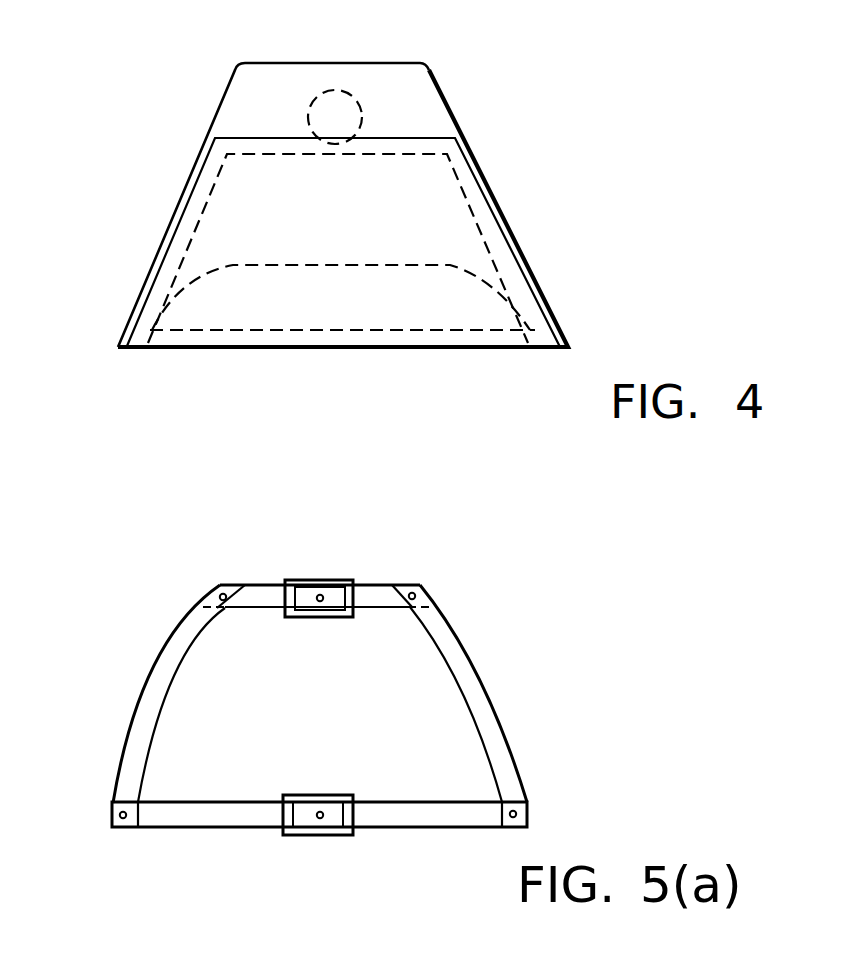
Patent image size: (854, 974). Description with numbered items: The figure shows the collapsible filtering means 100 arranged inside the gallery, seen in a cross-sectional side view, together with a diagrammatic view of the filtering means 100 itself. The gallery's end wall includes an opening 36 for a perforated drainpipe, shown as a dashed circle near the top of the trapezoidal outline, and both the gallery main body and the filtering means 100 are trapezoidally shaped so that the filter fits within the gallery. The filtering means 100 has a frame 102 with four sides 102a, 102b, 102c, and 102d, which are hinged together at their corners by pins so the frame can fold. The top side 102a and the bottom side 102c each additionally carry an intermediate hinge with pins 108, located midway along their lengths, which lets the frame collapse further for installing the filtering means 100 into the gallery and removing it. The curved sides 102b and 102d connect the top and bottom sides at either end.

In FIG. 4, the filtering means 100 is at (469, 150).
In FIG. 5A, the filtering means 100 is at (203, 608).
In FIG. 4, the frame 102 is at (190, 187).
In FIG. 4, the side 102a is at (280, 138).
In FIG. 5A, the side 102a is at (272, 585).
In FIG. 5A, the side 102b is at (473, 663).
In FIG. 5A, the side 102c is at (378, 797).
In FIG. 5A, the side 102d is at (138, 709).
In FIG. 4, the opening 36 is at (344, 90).
In FIG. 5A, the pins 108 is at (350, 580).